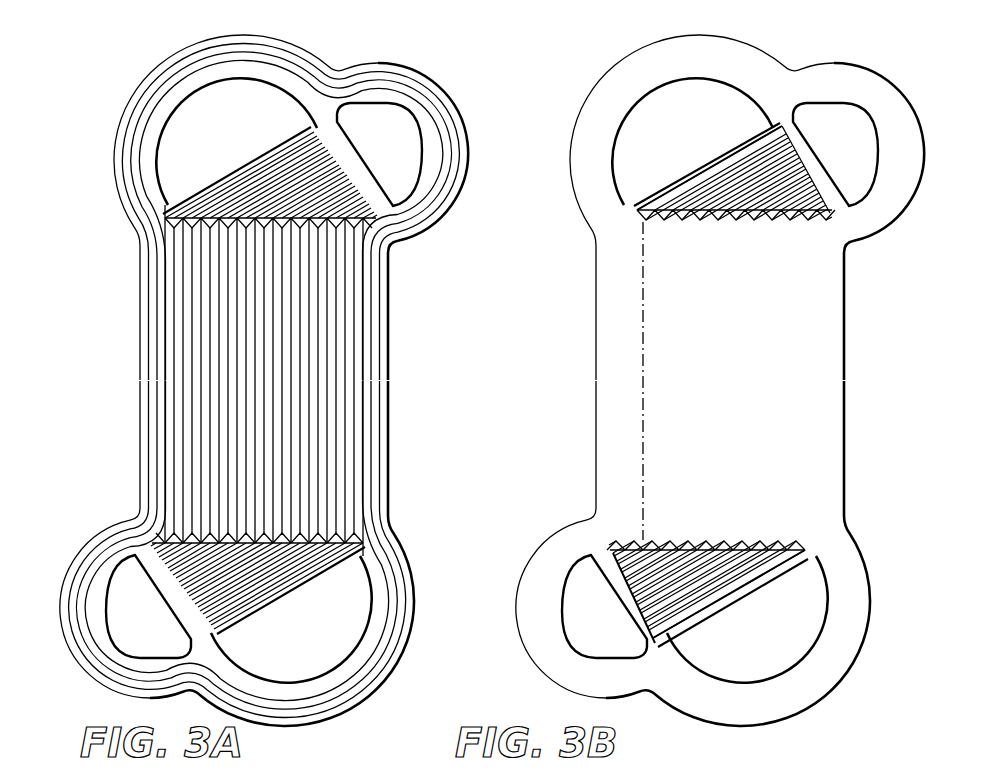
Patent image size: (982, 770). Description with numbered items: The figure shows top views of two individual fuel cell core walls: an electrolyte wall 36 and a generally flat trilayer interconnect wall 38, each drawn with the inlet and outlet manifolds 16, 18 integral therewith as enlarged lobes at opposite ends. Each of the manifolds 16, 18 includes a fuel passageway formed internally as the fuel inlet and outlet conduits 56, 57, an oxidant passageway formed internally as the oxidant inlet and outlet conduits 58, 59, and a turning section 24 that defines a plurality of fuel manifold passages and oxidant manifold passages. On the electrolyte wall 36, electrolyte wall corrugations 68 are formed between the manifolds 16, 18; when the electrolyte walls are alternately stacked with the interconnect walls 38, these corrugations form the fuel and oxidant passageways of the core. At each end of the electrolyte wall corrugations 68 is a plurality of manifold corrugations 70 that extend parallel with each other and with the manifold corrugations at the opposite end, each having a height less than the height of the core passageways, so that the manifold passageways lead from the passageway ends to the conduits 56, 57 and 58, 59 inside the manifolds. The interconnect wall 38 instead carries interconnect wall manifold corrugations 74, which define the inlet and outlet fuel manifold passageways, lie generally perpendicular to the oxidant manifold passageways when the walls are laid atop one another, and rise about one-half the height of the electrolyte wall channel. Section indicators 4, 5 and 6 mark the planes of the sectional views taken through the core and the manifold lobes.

In FIG. 3A, the inlet manifold 16 is at (200, 702).
In FIG. 3B, the inlet manifold 16 is at (652, 700).
In FIG. 3A, the outlet manifold 18 is at (332, 60).
In FIG. 3B, the outlet manifold 18 is at (785, 60).
In FIG. 3A, the turning section 24 is at (265, 152).
In FIG. 3B, the turning section 24 is at (834, 181).
In FIG. 3A, the electrolyte wall 36 is at (133, 264).
In FIG. 3B, the interconnect wall 38 is at (862, 328).
In FIG. 3A, the fuel inlet conduit 56 is at (363, 657).
In FIG. 3B, the fuel inlet conduit 56 is at (831, 631).
In FIG. 3A, the fuel outlet conduit 57 is at (252, 70).
In FIG. 3B, the fuel outlet conduit 57 is at (696, 72).
In FIG. 3A, the oxidant inlet conduit 58 is at (107, 567).
In FIG. 3B, the oxidant inlet conduit 58 is at (562, 572).
In FIG. 3A, the oxidant outlet conduit 59 is at (414, 126).
In FIG. 3B, the oxidant outlet conduit 59 is at (853, 104).
In FIG. 3A, the electrolyte wall corrugations 68 is at (337, 327).
In FIG. 3A, the manifold corrugations 70 is at (242, 190).
In FIG. 3B, the interconnect wall manifold corrugations 74 is at (794, 218).
In FIG. 3A, the section line 4- 4 is at (105, 358).
In FIG. 3B, the section line 4- 4 is at (566, 358).
In FIG. 3A, the section line 5- 5 is at (365, 545).
In FIG. 3B, the section line 5- 5 is at (825, 542).
In FIG. 3A, the section line 6- 6 is at (242, 172).
In FIG. 3B, the section line 6- 6 is at (700, 167).